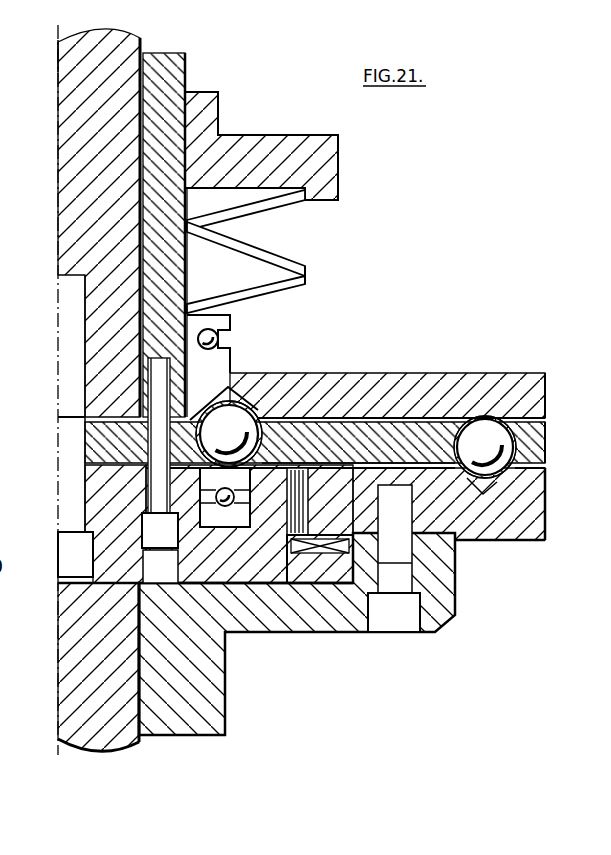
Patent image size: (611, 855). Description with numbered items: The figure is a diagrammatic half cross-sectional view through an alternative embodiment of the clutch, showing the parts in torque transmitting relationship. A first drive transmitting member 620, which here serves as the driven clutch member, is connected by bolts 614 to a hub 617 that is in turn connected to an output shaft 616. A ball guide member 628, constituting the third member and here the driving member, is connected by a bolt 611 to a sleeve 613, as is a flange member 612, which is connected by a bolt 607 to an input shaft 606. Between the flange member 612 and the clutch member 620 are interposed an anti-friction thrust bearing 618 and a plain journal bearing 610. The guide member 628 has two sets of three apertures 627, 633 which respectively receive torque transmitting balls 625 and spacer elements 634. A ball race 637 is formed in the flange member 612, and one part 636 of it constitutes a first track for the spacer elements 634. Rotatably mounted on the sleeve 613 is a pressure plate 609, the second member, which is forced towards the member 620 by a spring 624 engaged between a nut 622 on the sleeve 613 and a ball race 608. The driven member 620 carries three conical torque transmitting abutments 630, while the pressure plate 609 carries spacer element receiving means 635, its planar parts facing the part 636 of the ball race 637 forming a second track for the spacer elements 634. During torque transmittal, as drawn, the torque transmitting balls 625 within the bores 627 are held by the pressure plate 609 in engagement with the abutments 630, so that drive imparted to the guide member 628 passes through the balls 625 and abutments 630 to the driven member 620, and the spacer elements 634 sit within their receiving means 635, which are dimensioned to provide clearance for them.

The input shaft 606 is at (78, 97).
The sleeve 613 is at (168, 80).
The nut 622 is at (336, 152).
The spring 624 is at (284, 260).
The ball race 608 is at (215, 331).
The spacer elements 634 is at (227, 425).
The apertures 633 is at (243, 432).
The spacer element receiving means 635 is at (246, 402).
The part of ball race 636 is at (297, 456).
The pressure plate 609 is at (498, 372).
The apertures 627 is at (511, 424).
The ball guide member 628 is at (530, 440).
The torque transmitting balls 625 is at (517, 474).
The first drive transmitting member 620 is at (518, 517).
The conical torque transmitting abutments 630 is at (492, 490).
The ball race 637 is at (226, 498).
The plain journal bearing 610 is at (298, 515).
The anti-friction thrust bearing 618 is at (342, 545).
The bolts 614 is at (407, 617).
The hub 617 is at (206, 704).
The output shaft 616 is at (75, 687).
The bolt 611 is at (137, 605).
The flange member 612 is at (110, 556).
The bolt 607 is at (72, 554).